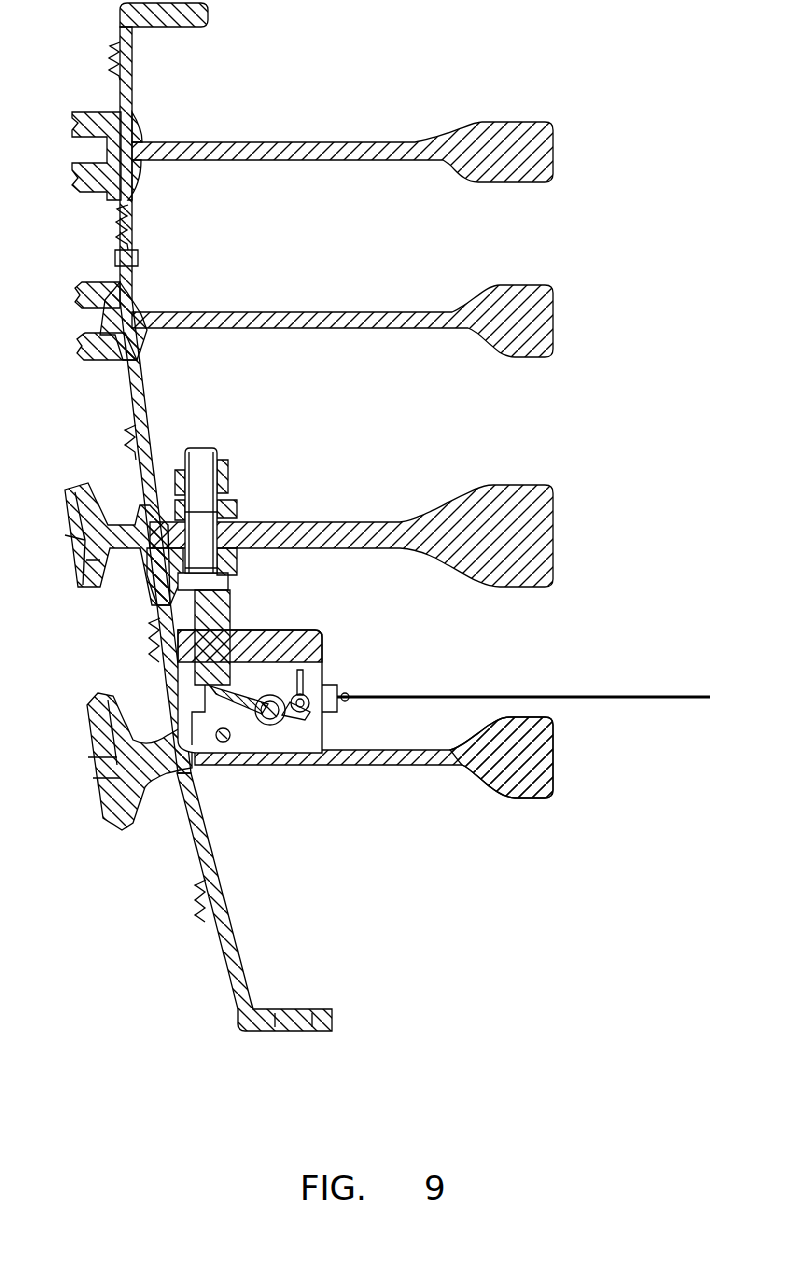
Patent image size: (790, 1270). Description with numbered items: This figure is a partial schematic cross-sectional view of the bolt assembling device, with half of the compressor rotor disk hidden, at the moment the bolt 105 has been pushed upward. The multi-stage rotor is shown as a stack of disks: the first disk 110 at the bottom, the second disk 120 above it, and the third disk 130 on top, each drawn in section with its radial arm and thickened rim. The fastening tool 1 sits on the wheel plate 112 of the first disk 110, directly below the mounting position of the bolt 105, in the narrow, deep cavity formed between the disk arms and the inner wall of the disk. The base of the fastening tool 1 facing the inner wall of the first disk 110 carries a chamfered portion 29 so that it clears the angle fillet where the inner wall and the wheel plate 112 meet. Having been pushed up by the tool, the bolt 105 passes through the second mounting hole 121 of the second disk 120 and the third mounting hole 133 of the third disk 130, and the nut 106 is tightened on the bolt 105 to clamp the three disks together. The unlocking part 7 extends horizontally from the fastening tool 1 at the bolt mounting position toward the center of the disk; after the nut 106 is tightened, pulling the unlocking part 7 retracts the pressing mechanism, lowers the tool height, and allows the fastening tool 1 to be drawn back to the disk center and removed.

The fastening tool 1 is at (325, 625).
The unlocking part 7 is at (565, 690).
The chamfered portion 29 is at (190, 735).
The bolt 105 is at (190, 578).
The nut 106 is at (177, 478).
The first disk 110 is at (532, 777).
The wheel plate 112 is at (380, 765).
The second disk 120 is at (527, 515).
The second mounting hole 121 is at (175, 545).
The third disk 130 is at (540, 330).
The third mounting hole 133 is at (178, 493).